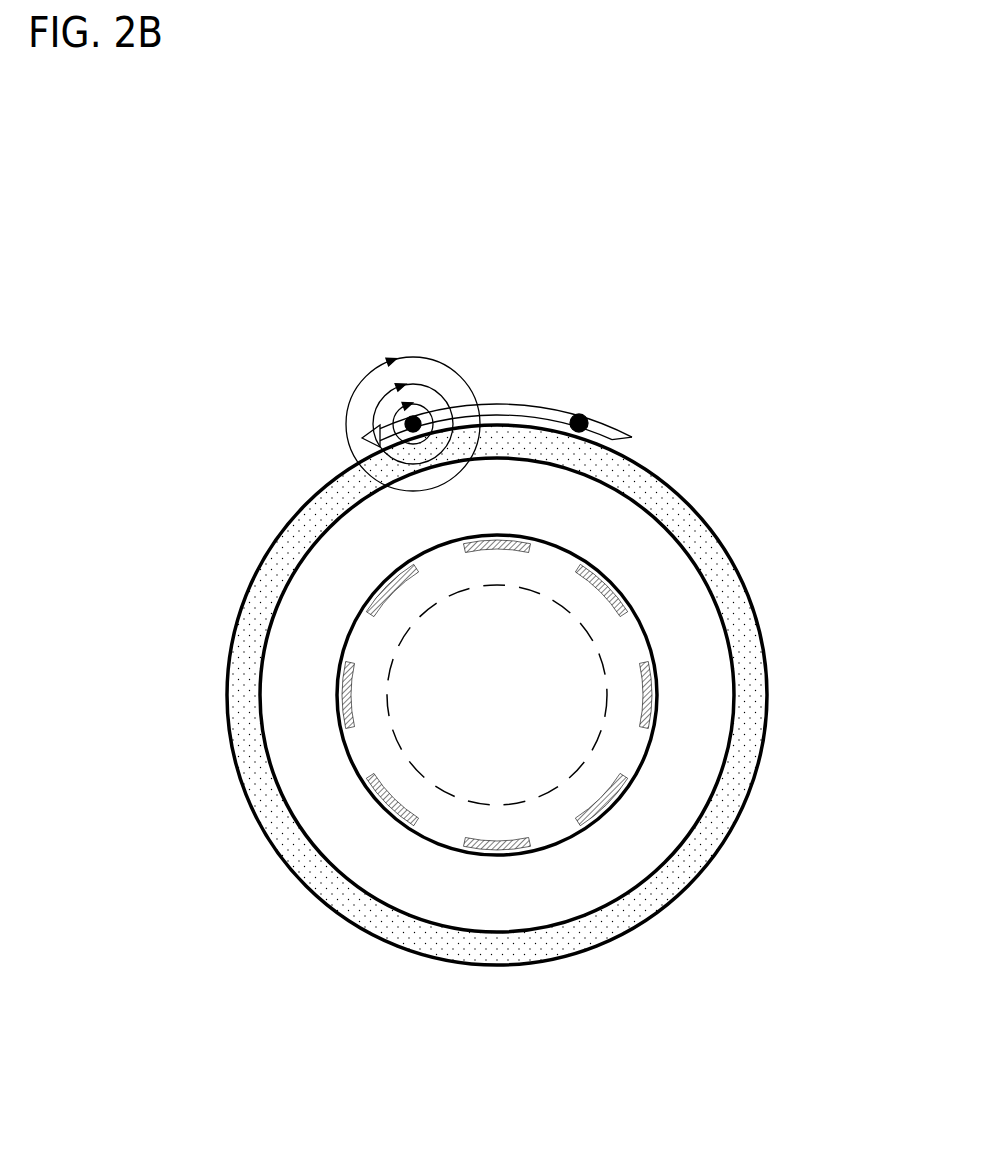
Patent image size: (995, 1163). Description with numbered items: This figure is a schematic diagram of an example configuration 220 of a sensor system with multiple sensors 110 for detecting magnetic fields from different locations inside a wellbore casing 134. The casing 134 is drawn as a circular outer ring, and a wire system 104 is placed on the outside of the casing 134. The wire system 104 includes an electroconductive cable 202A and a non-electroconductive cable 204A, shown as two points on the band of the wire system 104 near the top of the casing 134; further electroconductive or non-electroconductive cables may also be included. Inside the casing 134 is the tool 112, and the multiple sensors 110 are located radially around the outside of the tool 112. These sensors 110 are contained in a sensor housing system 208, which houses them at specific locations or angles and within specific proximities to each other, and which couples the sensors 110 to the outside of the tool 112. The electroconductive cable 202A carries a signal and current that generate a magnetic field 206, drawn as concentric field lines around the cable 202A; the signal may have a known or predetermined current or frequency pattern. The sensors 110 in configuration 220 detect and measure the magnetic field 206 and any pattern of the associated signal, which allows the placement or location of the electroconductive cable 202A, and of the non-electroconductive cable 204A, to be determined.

The configuration 220 is at (233, 267).
The casing 134 is at (770, 697).
The sensor housing system 208 is at (645, 767).
The tool 112 is at (590, 638).
The sensors 110 is at (508, 534).
The wire system 104 is at (635, 442).
The magnetic field 206 is at (362, 380).
The electroconductive cable 202A is at (405, 424).
The non-electroconductive cable 204A is at (583, 414).